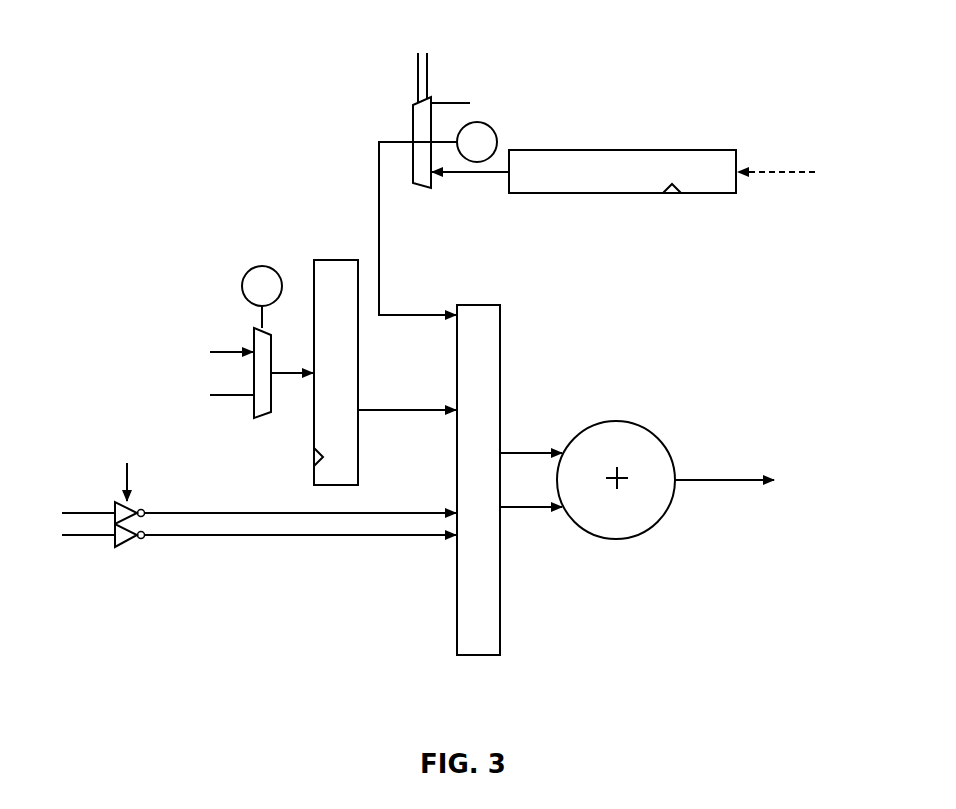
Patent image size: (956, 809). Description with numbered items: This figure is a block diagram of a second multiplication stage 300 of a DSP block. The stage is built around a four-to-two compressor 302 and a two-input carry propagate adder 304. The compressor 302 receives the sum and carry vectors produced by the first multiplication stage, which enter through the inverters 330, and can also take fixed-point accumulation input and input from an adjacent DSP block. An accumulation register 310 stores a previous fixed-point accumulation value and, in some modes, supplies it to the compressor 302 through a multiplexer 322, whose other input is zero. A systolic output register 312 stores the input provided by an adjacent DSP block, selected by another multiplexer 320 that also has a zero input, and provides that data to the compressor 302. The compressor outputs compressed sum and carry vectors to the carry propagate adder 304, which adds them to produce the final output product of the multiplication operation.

The second multiplication stage 300 is at (157, 101).
The 4:2 compressor 302 is at (478, 305).
The two-input carry propagate adder 304 is at (617, 422).
The accumulation register 310 is at (622, 150).
The systolic output register 312 is at (335, 260).
The multiplexer 320 is at (262, 420).
The multiplexer 322 is at (423, 188).
The inverters 330 is at (125, 548).